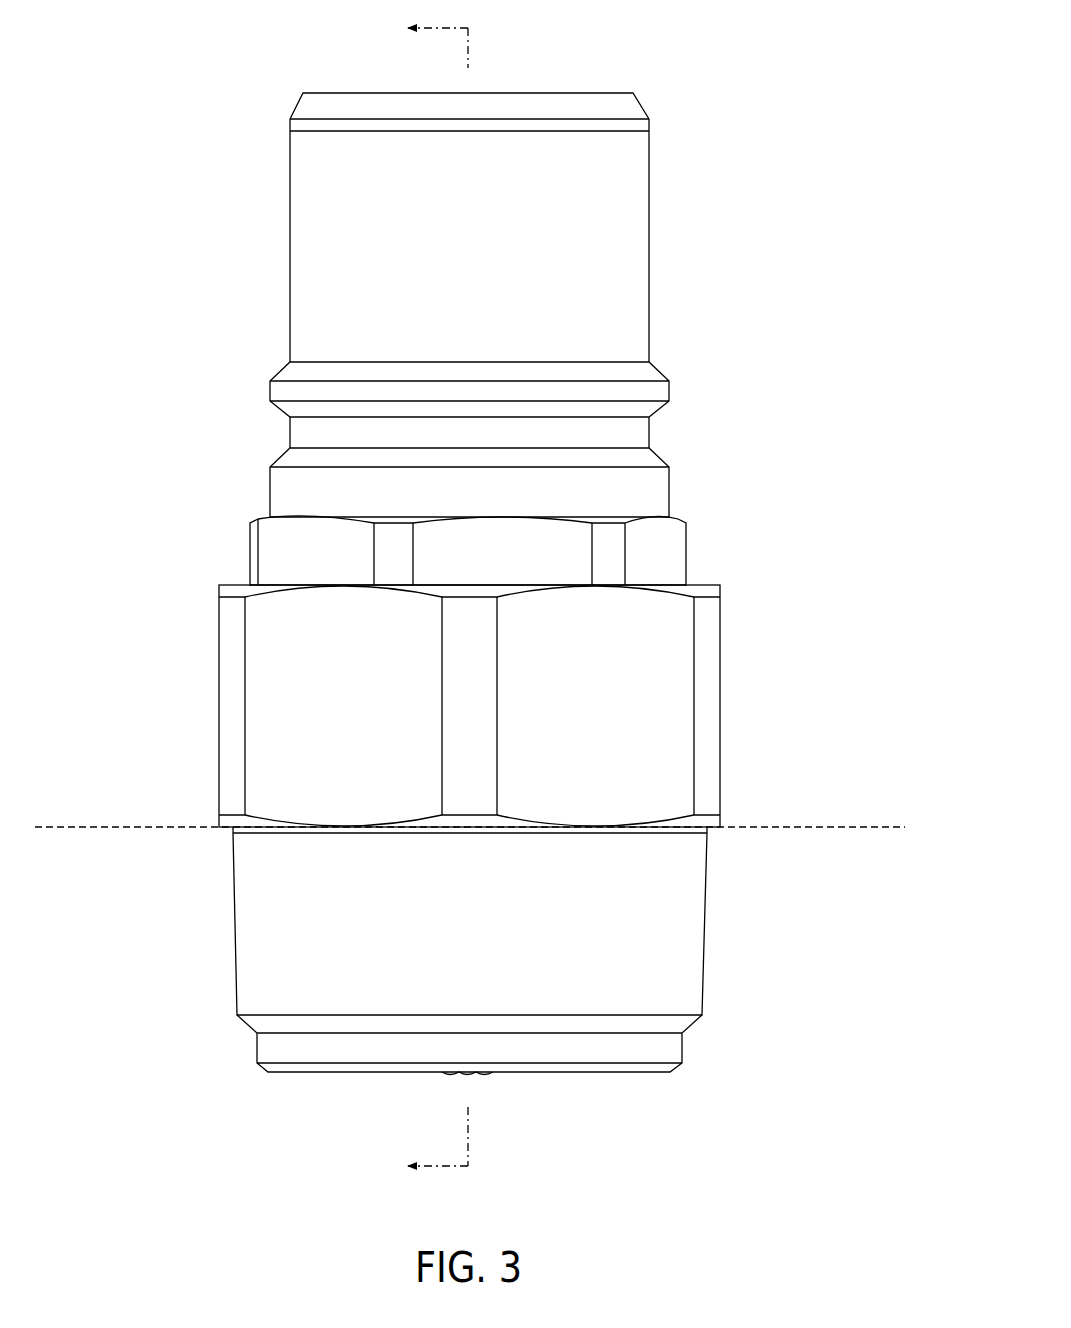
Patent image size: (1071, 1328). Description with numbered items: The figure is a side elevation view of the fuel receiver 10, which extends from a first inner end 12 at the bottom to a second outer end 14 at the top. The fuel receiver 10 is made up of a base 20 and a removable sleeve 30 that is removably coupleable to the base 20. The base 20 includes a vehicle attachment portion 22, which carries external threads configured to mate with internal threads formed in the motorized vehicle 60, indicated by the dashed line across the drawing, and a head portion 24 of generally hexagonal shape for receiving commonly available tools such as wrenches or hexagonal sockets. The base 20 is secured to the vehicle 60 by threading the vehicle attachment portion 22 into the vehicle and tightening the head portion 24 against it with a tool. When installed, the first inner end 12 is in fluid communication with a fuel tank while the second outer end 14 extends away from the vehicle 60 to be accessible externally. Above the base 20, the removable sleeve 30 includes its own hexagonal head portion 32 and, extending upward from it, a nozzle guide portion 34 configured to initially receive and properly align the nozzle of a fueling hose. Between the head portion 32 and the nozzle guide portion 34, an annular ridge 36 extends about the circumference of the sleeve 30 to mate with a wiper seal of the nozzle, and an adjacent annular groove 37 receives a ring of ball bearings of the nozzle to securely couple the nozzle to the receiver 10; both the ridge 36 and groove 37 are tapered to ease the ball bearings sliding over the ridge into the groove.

The fuel receiver 10 is at (738, 60).
The first inner end 12 is at (648, 1073).
The second outer end 14 is at (597, 93).
The base 20 is at (229, 948).
The vehicle attachment portion 22 is at (688, 912).
The head portion 24 is at (708, 725).
The removable sleeve 30 is at (286, 226).
The head portion 32 is at (688, 553).
The nozzle guide portion 34 is at (635, 243).
The annular ridge 36 is at (669, 389).
The annular groove 37 is at (649, 432).
The motorized vehicle 60 is at (99, 825).